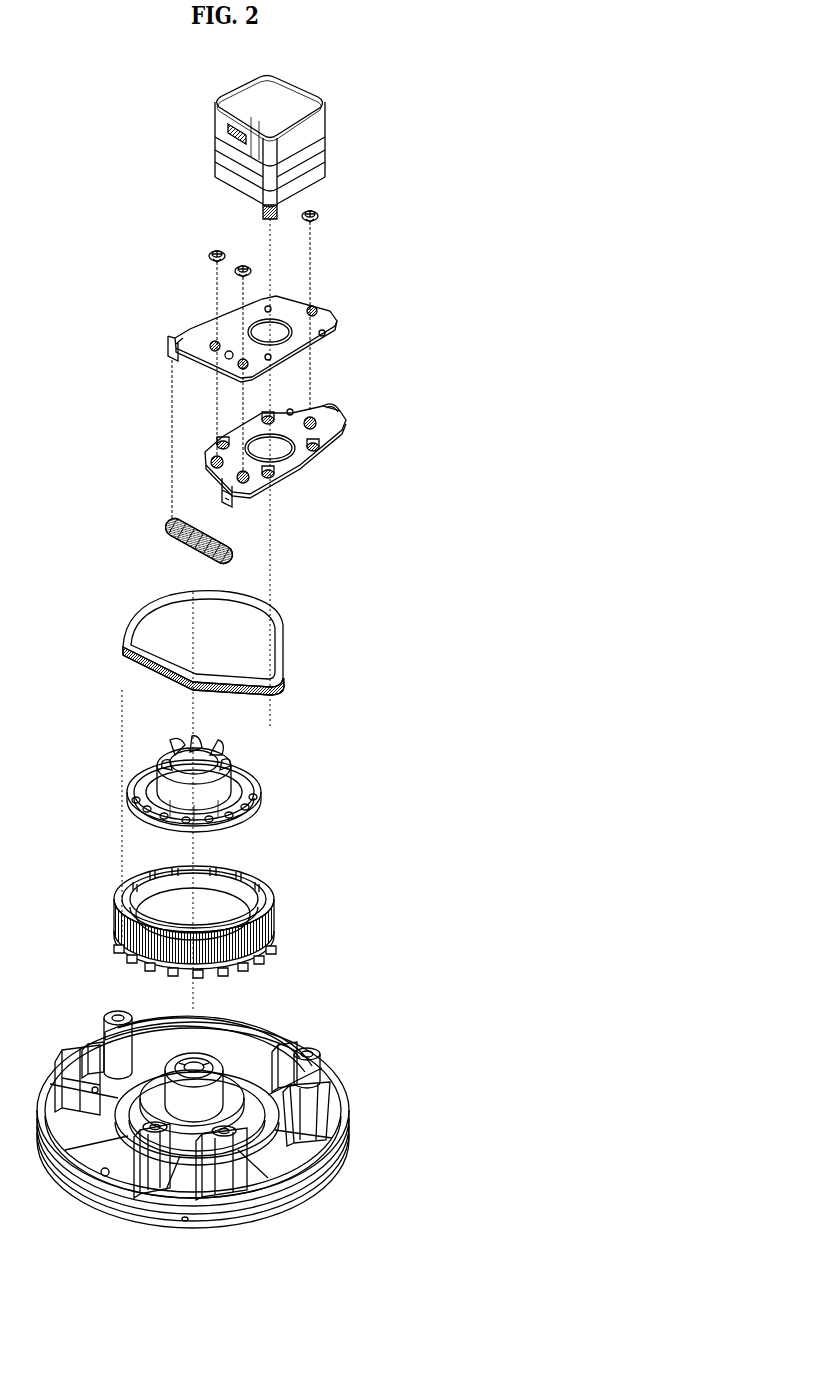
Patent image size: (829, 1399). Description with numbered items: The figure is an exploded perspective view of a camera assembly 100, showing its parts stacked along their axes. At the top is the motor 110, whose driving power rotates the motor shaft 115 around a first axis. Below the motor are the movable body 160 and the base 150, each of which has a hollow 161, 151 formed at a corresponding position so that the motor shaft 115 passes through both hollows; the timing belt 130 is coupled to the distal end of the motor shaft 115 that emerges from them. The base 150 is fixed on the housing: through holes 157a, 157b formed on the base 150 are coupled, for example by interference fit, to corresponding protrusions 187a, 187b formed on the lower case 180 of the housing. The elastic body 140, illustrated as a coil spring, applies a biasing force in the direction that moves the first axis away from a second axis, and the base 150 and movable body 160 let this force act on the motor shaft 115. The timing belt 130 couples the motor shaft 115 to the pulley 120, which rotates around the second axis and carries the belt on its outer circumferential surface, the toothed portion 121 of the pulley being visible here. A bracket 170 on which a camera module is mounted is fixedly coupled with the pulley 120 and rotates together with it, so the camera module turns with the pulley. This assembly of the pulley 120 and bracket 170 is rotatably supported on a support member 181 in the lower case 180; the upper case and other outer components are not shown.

The camera assembly 100 is at (90, 80).
The motor 110 is at (305, 128).
The motor shaft 115 is at (262, 214).
The movable body 160 is at (302, 323).
The hollow 161 is at (298, 333).
The through hole 157b is at (327, 406).
The base 150 is at (275, 424).
The hollow 151 is at (283, 452).
The through hole 157a is at (218, 487).
The elastic body 140 is at (176, 542).
The timing belt 130 is at (283, 648).
The bracket 170 is at (258, 778).
The pulley 120 is at (243, 916).
The gear teeth 121 is at (270, 921).
The support member 181 is at (235, 1058).
The protrusion 187b is at (325, 1070).
The lower case 180 is at (246, 1135).
The protrusion 187a is at (185, 1222).